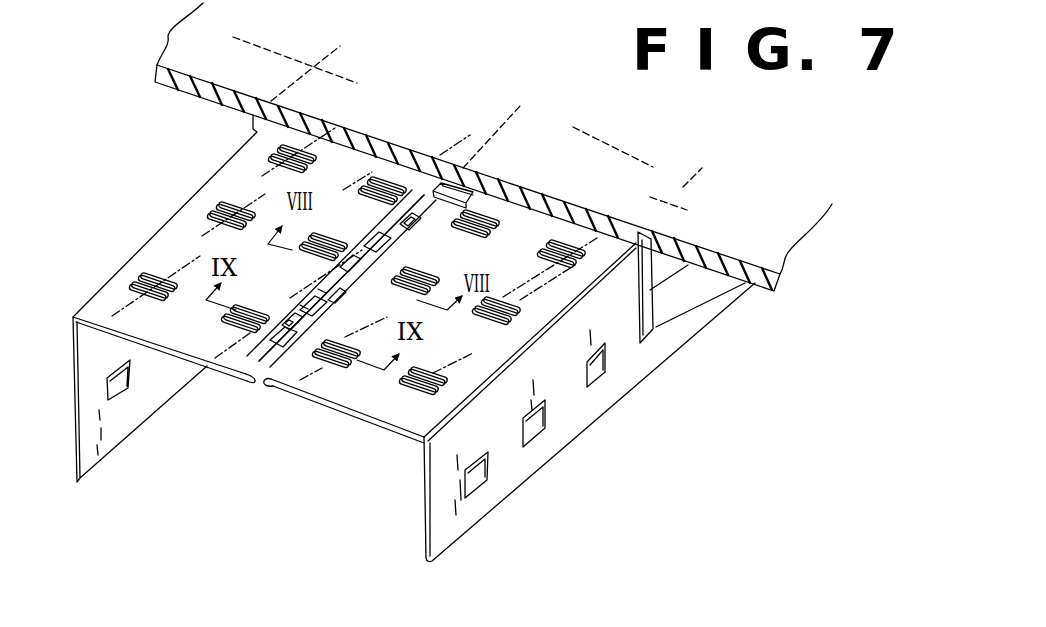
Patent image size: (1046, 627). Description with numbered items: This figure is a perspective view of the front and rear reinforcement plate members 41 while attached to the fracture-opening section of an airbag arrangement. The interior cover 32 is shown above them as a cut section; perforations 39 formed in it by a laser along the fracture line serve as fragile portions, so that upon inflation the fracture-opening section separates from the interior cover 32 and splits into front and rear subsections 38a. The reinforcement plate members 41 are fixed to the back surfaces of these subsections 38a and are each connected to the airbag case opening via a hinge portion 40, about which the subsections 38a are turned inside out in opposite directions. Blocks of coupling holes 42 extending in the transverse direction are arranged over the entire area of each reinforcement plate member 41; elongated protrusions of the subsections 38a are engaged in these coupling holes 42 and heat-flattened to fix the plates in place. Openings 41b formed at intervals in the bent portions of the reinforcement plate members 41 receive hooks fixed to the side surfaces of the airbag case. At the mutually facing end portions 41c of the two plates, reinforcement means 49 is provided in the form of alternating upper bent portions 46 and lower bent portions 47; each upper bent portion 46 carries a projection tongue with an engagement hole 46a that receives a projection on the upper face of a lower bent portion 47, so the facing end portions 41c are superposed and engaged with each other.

The interior cover 32 is at (187, 28).
The perforations 39 is at (271, 101).
The subsections of the fracture-opening section 38a is at (363, 118).
The reinforcement means 49 is at (417, 202).
The coupling holes 42 is at (568, 240).
The reinforcement plate members 41 is at (195, 226).
The hinge portion 40 is at (136, 259).
The upper bent portions 46 is at (388, 241).
The engagement hole 46a is at (409, 231).
The lower bent portions 47 is at (337, 293).
The facing end portions 41c is at (273, 378).
The openings 41b is at (488, 477).